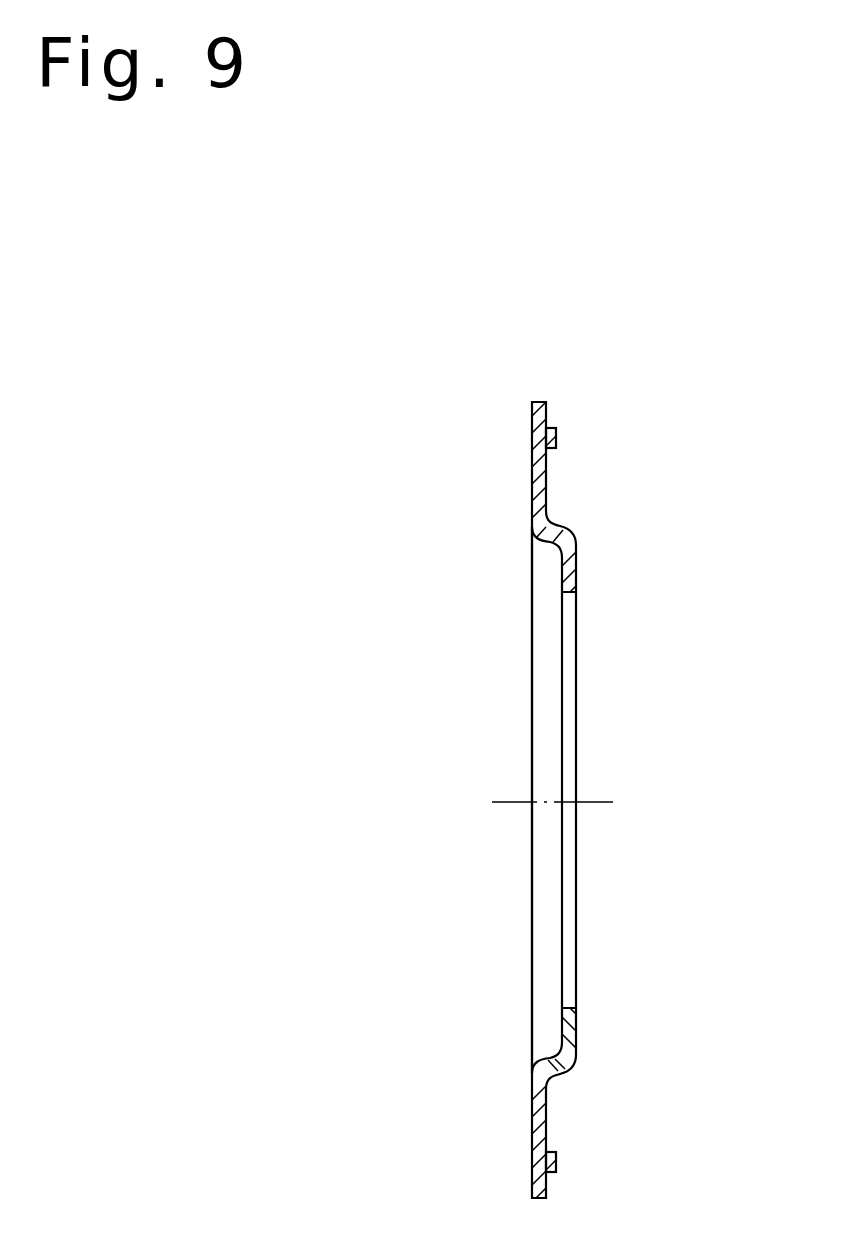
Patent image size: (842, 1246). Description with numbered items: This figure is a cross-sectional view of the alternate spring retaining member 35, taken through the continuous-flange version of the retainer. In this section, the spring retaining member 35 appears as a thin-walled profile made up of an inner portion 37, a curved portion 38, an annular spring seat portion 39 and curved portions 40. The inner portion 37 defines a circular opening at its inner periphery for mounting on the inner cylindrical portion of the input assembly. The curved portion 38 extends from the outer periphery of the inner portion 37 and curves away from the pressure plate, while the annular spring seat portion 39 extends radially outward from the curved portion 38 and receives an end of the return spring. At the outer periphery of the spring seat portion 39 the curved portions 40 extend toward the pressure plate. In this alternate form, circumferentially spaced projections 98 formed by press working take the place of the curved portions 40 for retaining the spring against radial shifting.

The spring retaining member 35 is at (514, 887).
The inner portion 37 is at (577, 582).
The curved portion 38 is at (532, 557).
The annular spring seat portion 39 is at (532, 492).
The curved portions 40 is at (532, 422).
The projections 98 is at (557, 436).